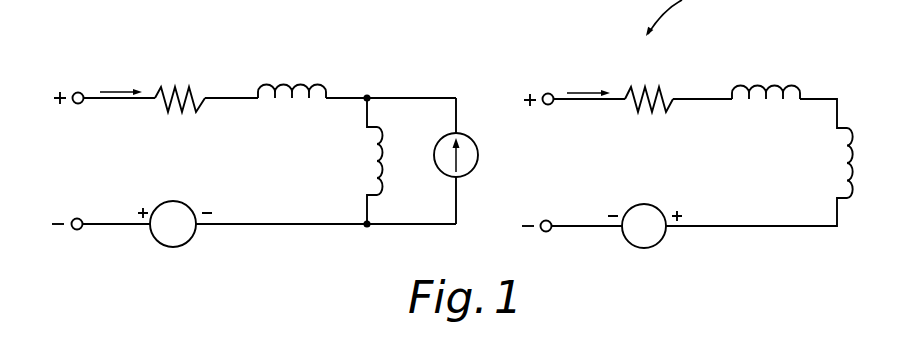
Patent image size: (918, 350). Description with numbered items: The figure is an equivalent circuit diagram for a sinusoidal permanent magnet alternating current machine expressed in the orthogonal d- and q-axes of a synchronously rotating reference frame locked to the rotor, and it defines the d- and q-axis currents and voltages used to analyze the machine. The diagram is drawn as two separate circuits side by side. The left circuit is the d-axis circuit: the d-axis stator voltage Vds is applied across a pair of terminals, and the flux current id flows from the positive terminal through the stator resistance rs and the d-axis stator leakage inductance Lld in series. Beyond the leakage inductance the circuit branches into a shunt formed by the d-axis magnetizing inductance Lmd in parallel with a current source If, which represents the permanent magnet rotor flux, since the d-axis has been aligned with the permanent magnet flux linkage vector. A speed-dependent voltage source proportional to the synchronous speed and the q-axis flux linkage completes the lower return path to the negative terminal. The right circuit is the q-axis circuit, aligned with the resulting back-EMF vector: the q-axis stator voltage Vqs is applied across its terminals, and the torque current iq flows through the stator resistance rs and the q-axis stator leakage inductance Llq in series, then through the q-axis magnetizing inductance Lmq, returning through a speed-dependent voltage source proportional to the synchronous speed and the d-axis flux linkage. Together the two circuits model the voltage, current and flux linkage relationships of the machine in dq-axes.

The d-axis stator voltage Vds is at (103, 161).
The flux current id is at (121, 78).
The stator resistance rs is at (414, 84).
The d-axis stator leakage inductance Lld is at (292, 74).
The d-axis magnetizing inductance Lmd is at (350, 161).
The field current source If is at (466, 161).
The q-axis stator voltage Vqs is at (573, 163).
The torque current iq is at (588, 78).
The q-axis stator leakage inductance Llq is at (766, 76).
The q-axis magnetizing inductance Lmq is at (759, 162).